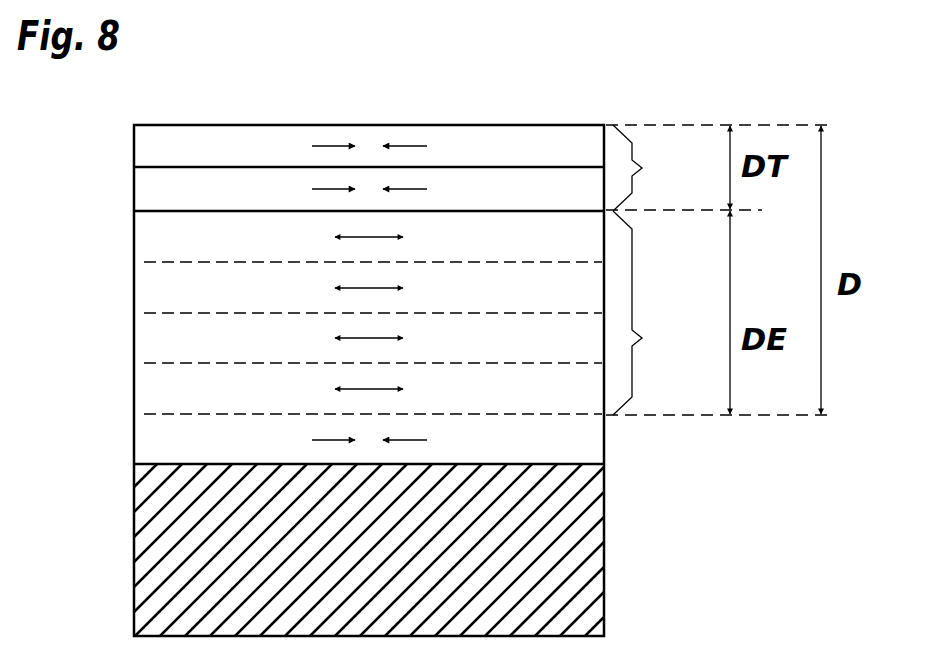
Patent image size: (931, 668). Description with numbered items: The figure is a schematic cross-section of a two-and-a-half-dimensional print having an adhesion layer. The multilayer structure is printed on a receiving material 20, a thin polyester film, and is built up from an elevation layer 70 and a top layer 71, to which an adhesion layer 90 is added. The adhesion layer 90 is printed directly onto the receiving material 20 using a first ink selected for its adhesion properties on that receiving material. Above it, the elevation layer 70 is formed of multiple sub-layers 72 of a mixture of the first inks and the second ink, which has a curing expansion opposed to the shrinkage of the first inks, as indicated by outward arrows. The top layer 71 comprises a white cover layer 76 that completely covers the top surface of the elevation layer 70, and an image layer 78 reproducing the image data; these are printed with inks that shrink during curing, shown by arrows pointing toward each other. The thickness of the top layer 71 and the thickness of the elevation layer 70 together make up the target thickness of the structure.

The receiving material 20 is at (135, 505).
The elevation layer 70 is at (651, 313).
The top layer 71 is at (650, 168).
The sub-layers 72 is at (141, 243).
The white cover layer 76 is at (143, 192).
The image layer 78 is at (143, 145).
The adhesion layer 90 is at (593, 453).